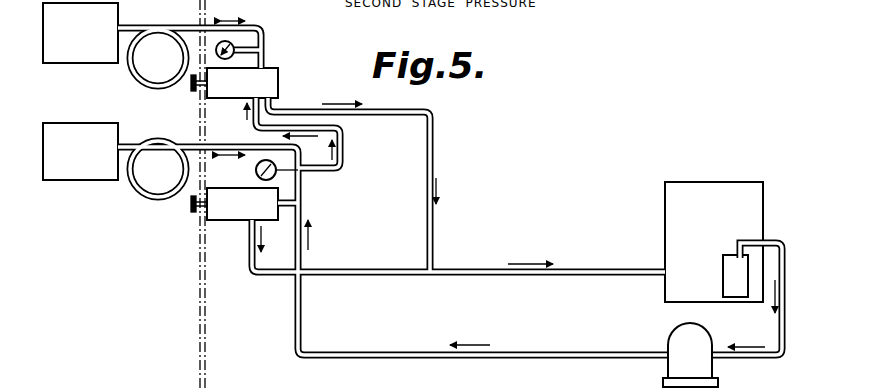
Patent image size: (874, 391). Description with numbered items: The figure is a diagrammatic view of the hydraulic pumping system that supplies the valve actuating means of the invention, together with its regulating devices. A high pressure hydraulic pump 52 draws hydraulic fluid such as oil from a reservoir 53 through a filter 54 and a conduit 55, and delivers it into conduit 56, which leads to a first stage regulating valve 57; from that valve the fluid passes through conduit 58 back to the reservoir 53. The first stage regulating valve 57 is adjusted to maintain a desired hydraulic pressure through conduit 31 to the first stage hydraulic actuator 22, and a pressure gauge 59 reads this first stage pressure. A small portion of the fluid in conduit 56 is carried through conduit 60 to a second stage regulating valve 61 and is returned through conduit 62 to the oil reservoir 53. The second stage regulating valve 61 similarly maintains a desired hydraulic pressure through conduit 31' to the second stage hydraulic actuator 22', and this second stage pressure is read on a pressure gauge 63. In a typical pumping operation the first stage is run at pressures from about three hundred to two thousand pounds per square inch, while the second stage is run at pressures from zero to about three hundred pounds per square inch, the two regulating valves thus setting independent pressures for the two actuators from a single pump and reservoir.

The first stage hydraulic actuator 22 is at (80, 169).
The second stage hydraulic actuator 22' is at (152, 50).
The conduit 31 is at (152, 187).
The conduit 31' is at (158, 74).
The high pressure hydraulic pump 52 is at (678, 370).
The reservoir 53 is at (740, 190).
The filter 54 is at (735, 268).
The conduit 55 is at (786, 347).
The conduit 56 is at (300, 330).
The first stage regulating valve 57 is at (239, 222).
The conduit 58 is at (356, 272).
The pressure gauge 59 is at (276, 176).
The conduit 60 is at (343, 145).
The second stage regulating valve 61 is at (262, 80).
The conduit 62 is at (432, 140).
The pressure gauge 63 is at (226, 44).